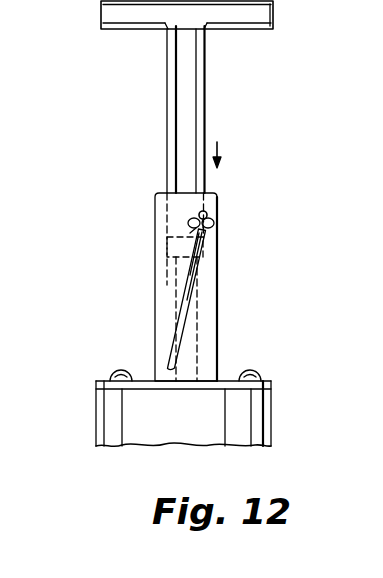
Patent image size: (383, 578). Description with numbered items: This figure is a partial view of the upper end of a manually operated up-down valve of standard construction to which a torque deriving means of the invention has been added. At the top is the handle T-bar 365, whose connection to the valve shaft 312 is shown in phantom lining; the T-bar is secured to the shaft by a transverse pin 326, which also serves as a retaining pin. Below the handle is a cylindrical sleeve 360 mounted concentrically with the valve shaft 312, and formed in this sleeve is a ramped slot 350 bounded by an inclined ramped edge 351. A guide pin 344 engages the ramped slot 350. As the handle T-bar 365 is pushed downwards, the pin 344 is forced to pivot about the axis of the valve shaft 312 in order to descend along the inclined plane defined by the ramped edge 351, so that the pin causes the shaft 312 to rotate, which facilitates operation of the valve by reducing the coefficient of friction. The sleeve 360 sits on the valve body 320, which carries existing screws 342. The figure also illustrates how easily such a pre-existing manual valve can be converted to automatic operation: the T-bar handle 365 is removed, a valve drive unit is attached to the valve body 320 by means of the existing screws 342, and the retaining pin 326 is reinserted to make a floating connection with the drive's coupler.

The handle T-bar 365 is at (200, 83).
The guide pin 344 is at (210, 221).
The transverse pin 326 is at (167, 248).
The cylindrical sleeve 360 is at (219, 268).
The valve shaft 312 is at (167, 284).
The ramped edge 351 is at (195, 292).
The ramped slot 350 is at (200, 318).
The screws 342 is at (119, 372).
The valve body 320 is at (113, 426).